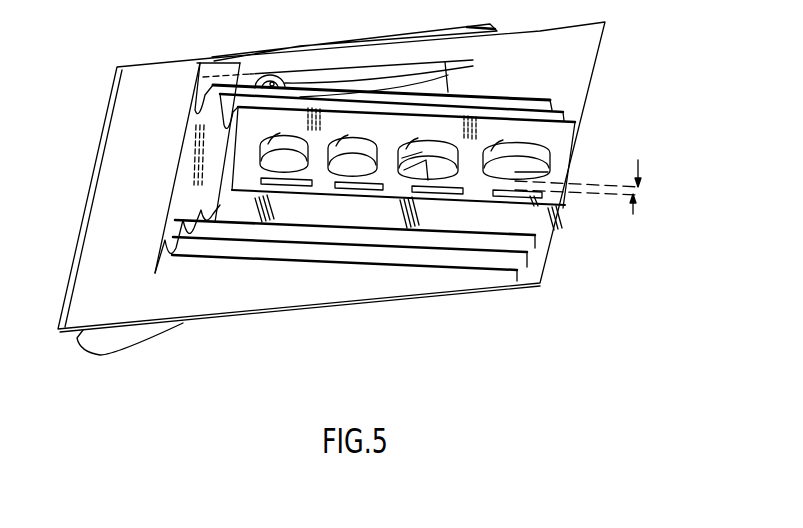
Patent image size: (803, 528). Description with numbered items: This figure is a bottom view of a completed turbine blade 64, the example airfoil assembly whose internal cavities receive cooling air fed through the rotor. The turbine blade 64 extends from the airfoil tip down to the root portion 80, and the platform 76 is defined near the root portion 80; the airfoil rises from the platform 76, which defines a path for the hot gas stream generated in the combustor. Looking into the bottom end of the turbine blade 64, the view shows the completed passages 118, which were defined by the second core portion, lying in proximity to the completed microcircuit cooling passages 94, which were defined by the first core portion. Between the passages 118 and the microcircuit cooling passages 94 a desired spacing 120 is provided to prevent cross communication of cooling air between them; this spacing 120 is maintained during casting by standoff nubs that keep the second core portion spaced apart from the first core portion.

The turbine blade 64 is at (128, 402).
The platform 76 is at (578, 72).
The root portion 80 is at (567, 135).
The microcircuit cooling passages 94 is at (363, 190).
The completed passages 118 is at (400, 160).
The desired spacing 120 is at (633, 214).